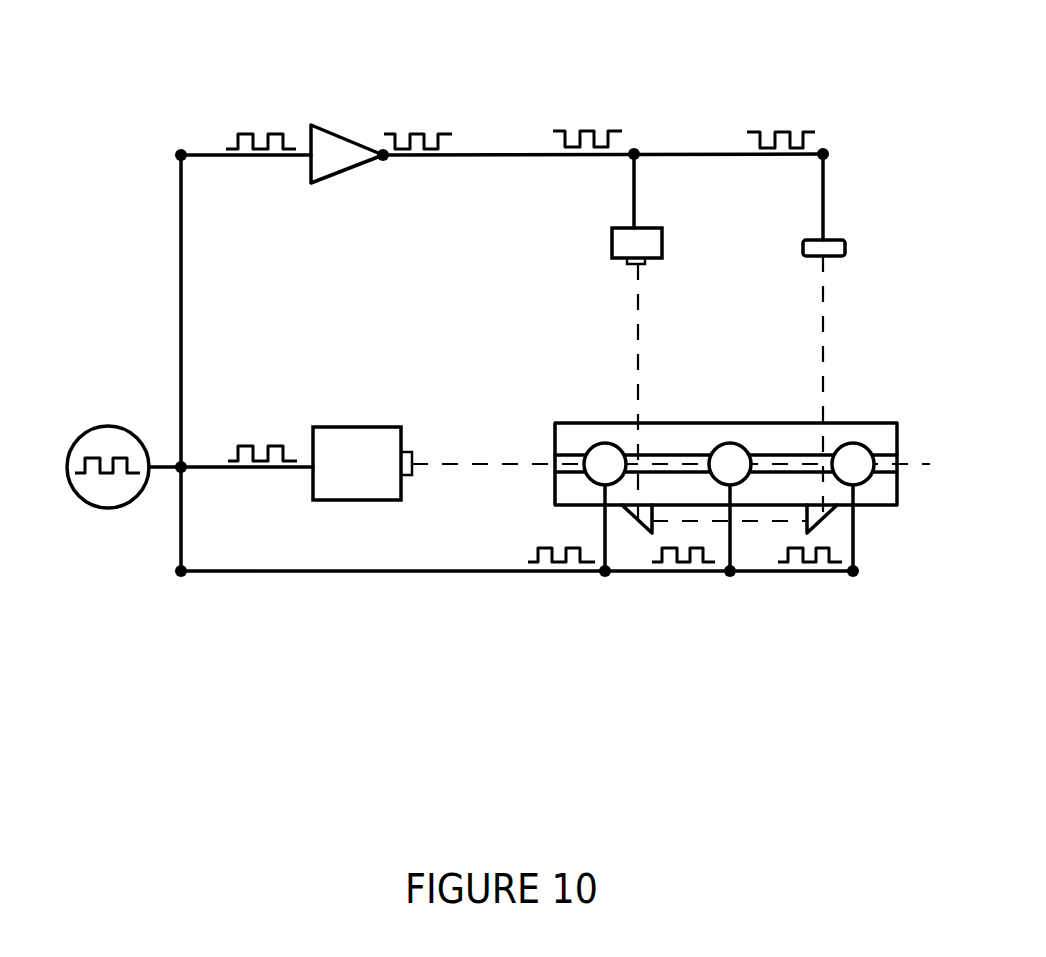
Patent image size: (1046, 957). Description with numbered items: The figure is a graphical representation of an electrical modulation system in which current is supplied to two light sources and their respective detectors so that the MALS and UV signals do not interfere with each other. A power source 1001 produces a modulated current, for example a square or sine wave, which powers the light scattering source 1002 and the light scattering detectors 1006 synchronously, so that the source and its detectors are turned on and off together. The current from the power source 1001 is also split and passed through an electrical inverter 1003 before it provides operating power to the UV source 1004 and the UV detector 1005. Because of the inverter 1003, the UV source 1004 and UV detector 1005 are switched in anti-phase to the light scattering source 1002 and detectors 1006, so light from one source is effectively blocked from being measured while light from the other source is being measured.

The power source 1001 is at (102, 422).
The light scattering source 1002 is at (362, 420).
The electrical inverter 1003 is at (353, 125).
The UV source 1004 is at (615, 217).
The UV detector 1005 is at (807, 228).
The light scattering detectors 1006 is at (598, 458).